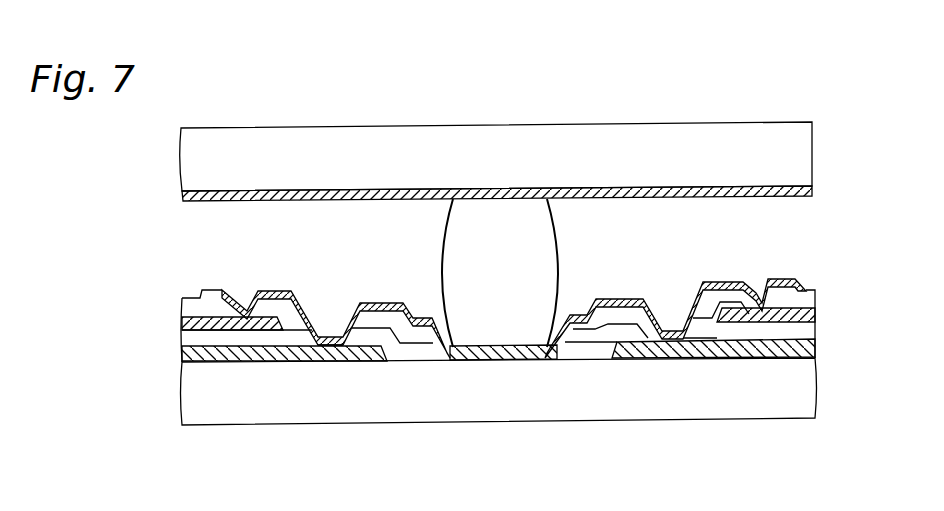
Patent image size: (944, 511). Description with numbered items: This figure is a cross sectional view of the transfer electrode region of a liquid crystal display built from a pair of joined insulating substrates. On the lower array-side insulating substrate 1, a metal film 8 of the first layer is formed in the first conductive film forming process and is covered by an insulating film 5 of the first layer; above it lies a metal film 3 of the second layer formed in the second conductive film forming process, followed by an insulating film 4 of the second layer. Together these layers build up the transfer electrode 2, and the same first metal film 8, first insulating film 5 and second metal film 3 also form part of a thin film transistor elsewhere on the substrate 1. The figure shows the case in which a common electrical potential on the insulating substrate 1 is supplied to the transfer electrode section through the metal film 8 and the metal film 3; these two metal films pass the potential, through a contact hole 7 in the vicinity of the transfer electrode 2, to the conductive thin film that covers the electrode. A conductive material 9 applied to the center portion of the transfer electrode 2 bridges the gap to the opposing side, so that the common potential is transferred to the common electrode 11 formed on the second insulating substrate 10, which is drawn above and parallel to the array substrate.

The insulating substrate 1 is at (573, 393).
The transfer electrode 2 is at (477, 361).
The metal film of the second layer 3 is at (805, 318).
The insulating film of the second layer 4 is at (198, 305).
The insulating film of the first layer 5 is at (200, 337).
The contact hole 7 is at (243, 291).
The metal film of the first layer 8 is at (317, 361).
The conductive material 9 is at (532, 228).
The second insulating substrate 10 is at (322, 148).
The common electrode 11 is at (816, 190).